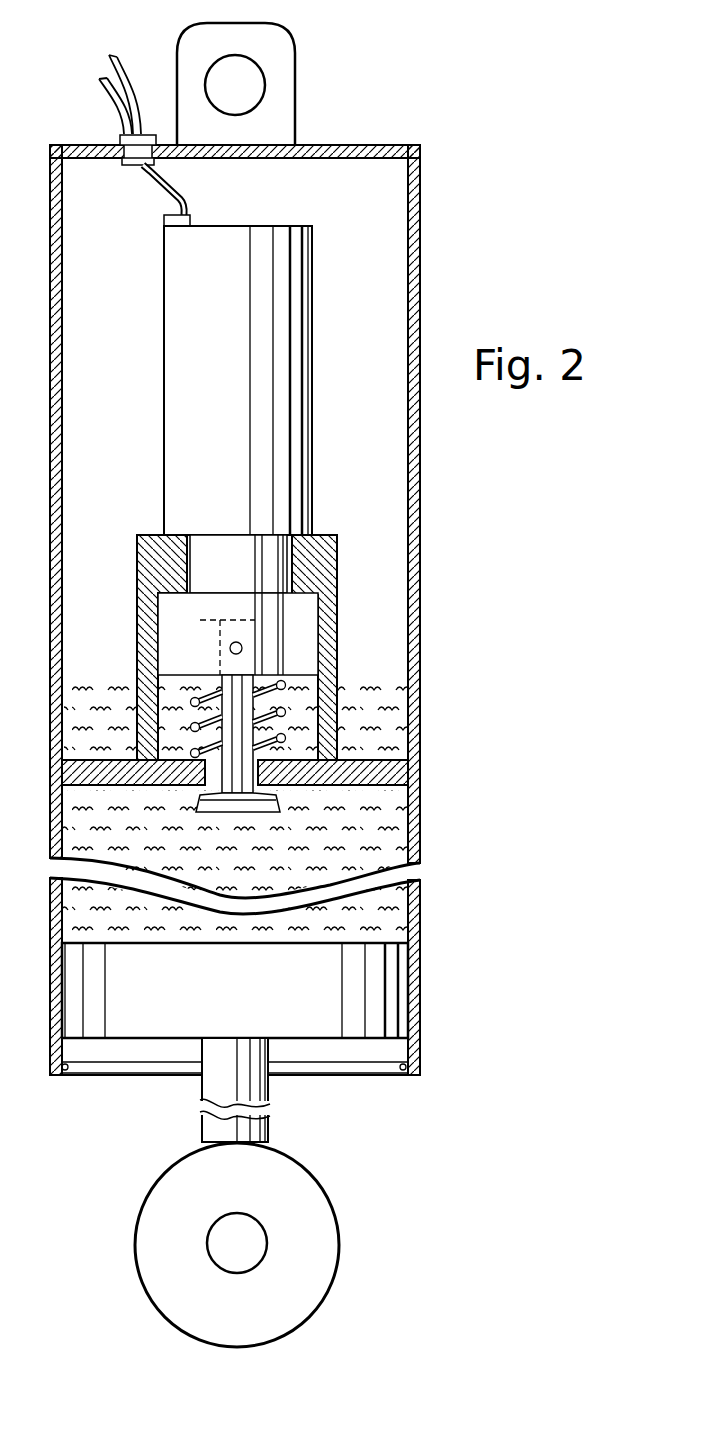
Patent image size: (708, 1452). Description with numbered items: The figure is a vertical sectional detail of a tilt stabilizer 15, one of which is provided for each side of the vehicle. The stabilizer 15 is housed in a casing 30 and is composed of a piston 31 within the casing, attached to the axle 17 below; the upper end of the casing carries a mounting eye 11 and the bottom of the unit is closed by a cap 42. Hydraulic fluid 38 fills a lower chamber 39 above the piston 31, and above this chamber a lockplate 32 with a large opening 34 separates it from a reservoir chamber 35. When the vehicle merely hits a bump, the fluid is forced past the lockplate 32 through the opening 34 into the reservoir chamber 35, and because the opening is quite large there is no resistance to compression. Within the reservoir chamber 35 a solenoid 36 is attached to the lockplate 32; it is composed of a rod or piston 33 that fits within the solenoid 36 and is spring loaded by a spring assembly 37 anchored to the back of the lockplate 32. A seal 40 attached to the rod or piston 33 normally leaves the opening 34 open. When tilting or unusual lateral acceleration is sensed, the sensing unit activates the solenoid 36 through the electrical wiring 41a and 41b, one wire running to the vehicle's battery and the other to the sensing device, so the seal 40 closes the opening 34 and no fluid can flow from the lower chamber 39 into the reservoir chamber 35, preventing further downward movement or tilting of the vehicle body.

The upper mounting eye 11 is at (275, 90).
The tilt stabilizer 15 is at (450, 148).
The axle 17 is at (285, 1218).
The casing 30 is at (420, 250).
The piston 31 is at (370, 980).
The lockplate 32 is at (325, 748).
The rod or piston 33 is at (280, 712).
The opening 34 is at (273, 742).
The reservoir chamber 35 is at (355, 505).
The solenoid 36 is at (283, 342).
The spring assembly 37 is at (283, 683).
The hydraulic fluid 38 is at (383, 918).
The lower chamber 39 is at (380, 850).
The seal 40 is at (285, 812).
The electrical wiring 41a is at (124, 62).
The electrical wiring 41b is at (113, 92).
The bottom cap 42 is at (405, 1078).